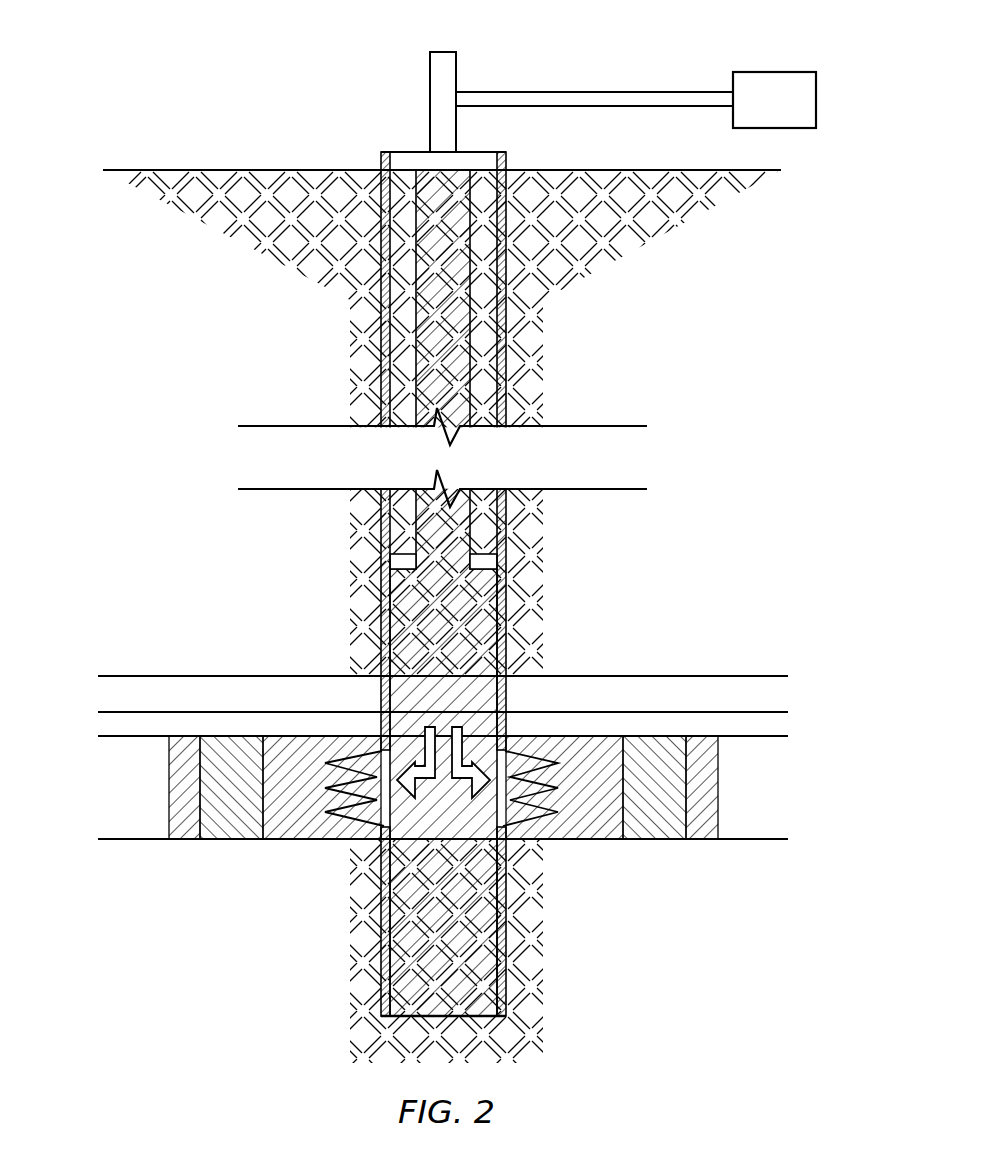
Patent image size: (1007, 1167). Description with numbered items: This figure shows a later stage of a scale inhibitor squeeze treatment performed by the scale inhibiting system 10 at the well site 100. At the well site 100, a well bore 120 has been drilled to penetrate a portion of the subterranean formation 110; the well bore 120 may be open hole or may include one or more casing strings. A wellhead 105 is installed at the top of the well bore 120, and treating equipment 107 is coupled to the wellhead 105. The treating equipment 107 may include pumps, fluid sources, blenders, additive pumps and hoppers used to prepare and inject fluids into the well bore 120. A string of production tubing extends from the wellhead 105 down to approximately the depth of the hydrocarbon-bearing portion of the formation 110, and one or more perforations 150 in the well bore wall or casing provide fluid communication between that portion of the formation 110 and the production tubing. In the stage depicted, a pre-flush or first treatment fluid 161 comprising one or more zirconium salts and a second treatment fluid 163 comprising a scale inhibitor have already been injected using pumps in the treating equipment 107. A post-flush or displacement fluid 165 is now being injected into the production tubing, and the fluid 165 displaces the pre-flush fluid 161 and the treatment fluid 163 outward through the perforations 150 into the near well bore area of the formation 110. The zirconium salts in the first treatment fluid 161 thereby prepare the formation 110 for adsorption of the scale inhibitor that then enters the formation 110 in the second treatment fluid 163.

The well site 100 is at (466, 77).
The scale inhibiting system 10 is at (140, 150).
The wellhead 105 is at (430, 68).
The treating equipment 107 is at (791, 114).
The subterranean formation 110 is at (274, 289).
The well bore 120 is at (507, 342).
The post-flush/displacement fluid 165 is at (460, 655).
The second treatment fluid 163 is at (673, 760).
The first treatment fluid 161 is at (443, 757).
The perforations 150 is at (343, 815).